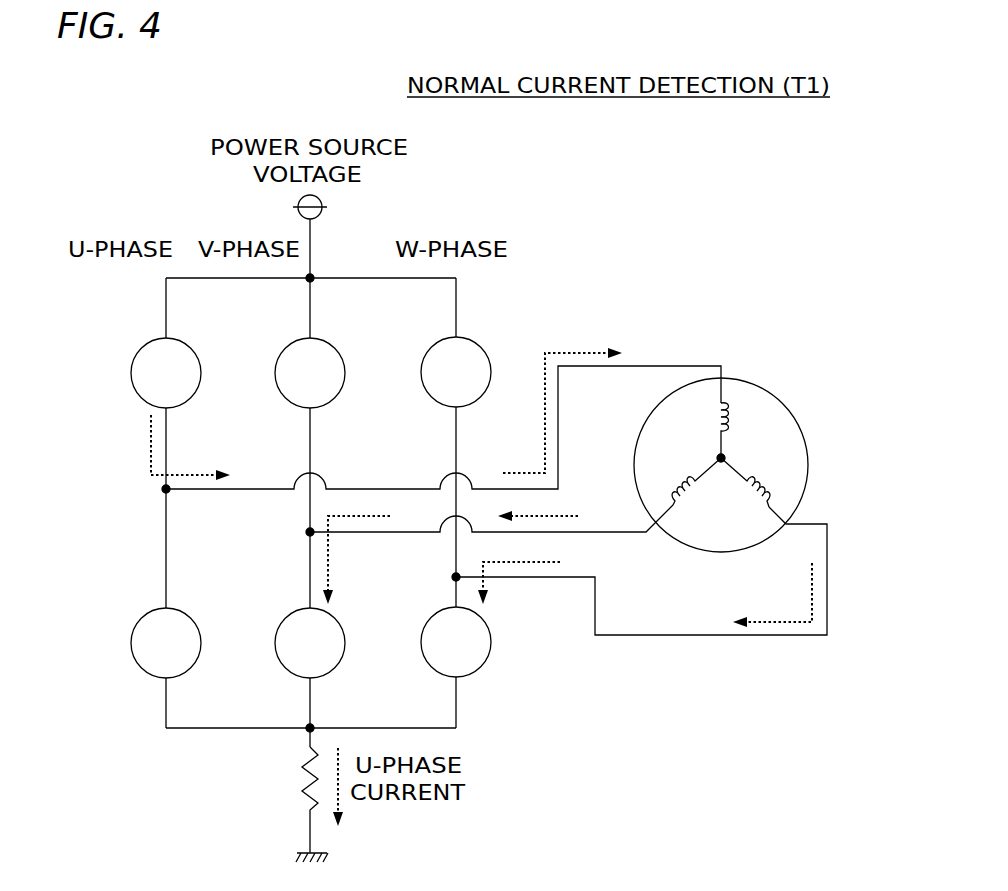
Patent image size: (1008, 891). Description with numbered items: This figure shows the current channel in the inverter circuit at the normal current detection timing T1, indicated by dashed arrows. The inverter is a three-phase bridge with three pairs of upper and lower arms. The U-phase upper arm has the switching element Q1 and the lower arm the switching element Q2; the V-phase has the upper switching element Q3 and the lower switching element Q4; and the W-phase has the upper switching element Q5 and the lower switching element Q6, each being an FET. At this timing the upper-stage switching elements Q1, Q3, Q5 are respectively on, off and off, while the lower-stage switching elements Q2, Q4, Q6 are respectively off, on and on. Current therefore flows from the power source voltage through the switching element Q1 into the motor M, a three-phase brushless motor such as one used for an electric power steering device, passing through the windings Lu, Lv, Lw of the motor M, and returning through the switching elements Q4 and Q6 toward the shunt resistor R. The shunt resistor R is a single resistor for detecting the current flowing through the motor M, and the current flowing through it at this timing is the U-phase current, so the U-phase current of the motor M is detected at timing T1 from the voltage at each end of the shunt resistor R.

The switching element Q1 is at (164, 365).
The switching element Q2 is at (164, 635).
The switching element Q3 is at (308, 365).
The switching element Q4 is at (308, 635).
The switching element Q5 is at (450, 363).
The switching element Q6 is at (454, 633).
The motor M is at (732, 460).
The winding Lu is at (738, 430).
The winding Lv is at (685, 481).
The winding Lw is at (754, 482).
The shunt resistor R is at (305, 804).